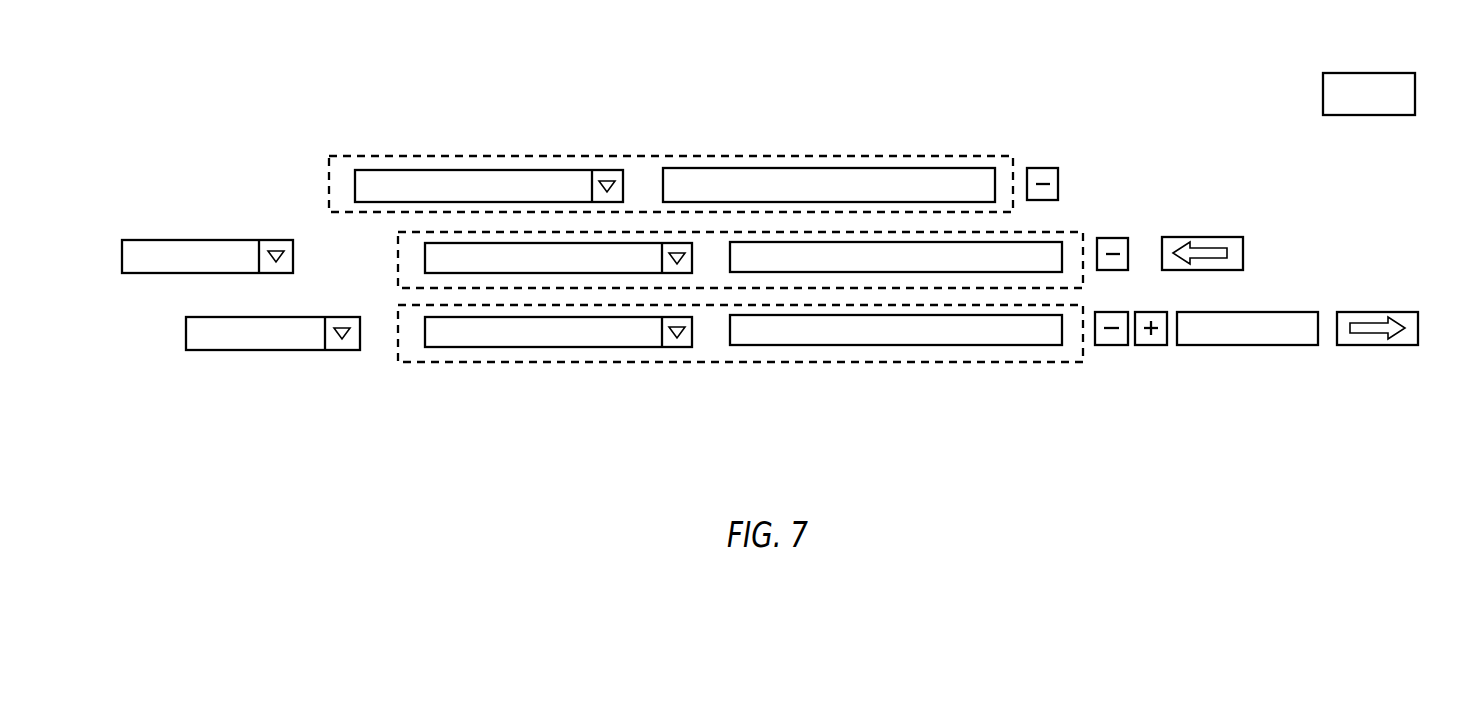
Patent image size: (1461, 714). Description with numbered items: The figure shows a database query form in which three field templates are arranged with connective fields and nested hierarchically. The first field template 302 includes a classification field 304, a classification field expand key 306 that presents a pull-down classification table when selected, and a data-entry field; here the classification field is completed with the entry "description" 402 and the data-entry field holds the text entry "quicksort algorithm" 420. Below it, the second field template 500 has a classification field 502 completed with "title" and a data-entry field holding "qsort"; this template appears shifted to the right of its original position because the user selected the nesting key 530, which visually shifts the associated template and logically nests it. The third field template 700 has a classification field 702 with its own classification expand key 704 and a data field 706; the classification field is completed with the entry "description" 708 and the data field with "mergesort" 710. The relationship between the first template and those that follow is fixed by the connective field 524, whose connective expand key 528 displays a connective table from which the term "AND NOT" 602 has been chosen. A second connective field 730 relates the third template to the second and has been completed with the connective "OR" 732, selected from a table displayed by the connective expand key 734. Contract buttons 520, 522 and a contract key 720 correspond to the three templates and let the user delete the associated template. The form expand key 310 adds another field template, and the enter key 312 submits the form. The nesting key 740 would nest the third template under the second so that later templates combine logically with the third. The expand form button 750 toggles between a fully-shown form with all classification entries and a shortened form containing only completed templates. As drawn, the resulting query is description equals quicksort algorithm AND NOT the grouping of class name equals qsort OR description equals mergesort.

The field template 302 is at (672, 130).
The classification field 304 is at (515, 125).
The classification field expand key 306 is at (634, 125).
The description classification entry 402 is at (448, 143).
The quicksort algorithm text entry 420 is at (839, 128).
The field template 500 is at (755, 216).
The classification field 502 is at (512, 257).
The contract button 520 is at (1069, 147).
The contract button 522 is at (1197, 192).
The nesting key 530 is at (1254, 223).
The third field template 700 is at (740, 401).
The classification field 702 is at (576, 407).
The classification expand key 704 is at (694, 367).
The data field 706 is at (896, 380).
The description classification entry 708 is at (536, 388).
The mergesort data entry 710 is at (818, 380).
The contract key 720 is at (1123, 381).
The form expand key 310 is at (1178, 372).
The enter key 312 is at (1247, 371).
The nesting key 740 is at (1377, 368).
The expand form button 750 is at (1381, 119).
The connective field 524 is at (188, 243).
The connective expand key 528 is at (258, 211).
The AND NOT connective term 602 is at (164, 290).
The connective field 730 is at (287, 401).
The OR connective term 732 is at (190, 369).
The connective expand key 734 is at (375, 368).